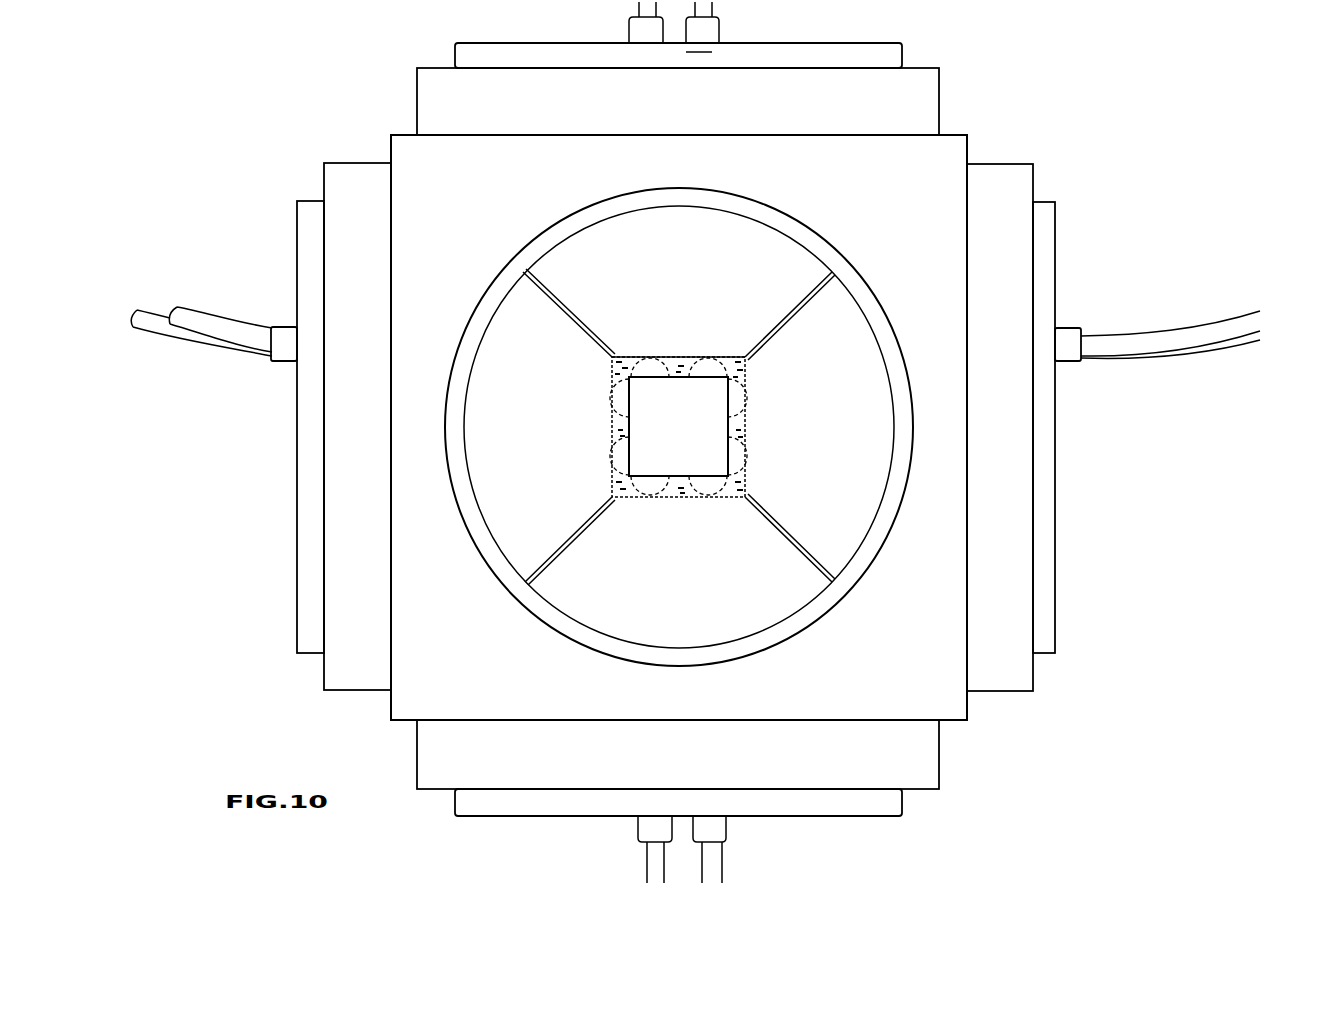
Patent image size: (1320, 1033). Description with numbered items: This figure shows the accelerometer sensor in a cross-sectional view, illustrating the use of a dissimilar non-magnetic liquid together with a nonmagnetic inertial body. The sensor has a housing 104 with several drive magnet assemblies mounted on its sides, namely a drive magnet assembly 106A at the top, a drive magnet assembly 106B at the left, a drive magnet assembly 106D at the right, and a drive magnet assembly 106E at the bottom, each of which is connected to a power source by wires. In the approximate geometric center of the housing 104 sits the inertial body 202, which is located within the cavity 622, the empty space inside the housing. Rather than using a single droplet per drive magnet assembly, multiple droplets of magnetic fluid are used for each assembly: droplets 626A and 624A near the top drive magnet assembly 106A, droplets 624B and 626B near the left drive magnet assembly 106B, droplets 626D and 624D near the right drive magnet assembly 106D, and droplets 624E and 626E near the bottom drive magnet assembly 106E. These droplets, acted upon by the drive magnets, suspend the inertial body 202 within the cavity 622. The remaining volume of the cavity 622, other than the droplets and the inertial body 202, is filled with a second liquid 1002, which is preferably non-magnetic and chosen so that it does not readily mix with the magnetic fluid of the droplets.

The housing 104 is at (948, 602).
The drive magnet assembly 106A is at (922, 100).
The drive magnet assembly 106B is at (345, 608).
The drive magnet assembly 106D is at (1022, 183).
The drive magnet assembly 106E is at (916, 750).
The inertial body 202 is at (712, 434).
The cavity 622 is at (678, 485).
The second liquid 1002 is at (675, 365).
The droplet 624A is at (710, 367).
The droplet 626A is at (650, 365).
The droplet 624B is at (619, 392).
The droplet 626B is at (617, 455).
The droplet 624D is at (737, 460).
The droplet 626D is at (738, 400).
The droplet 624E is at (647, 487).
The droplet 626E is at (715, 487).